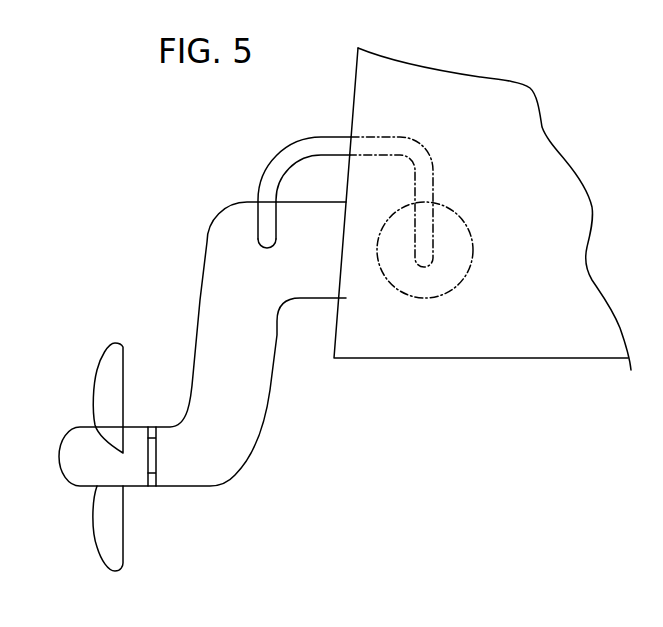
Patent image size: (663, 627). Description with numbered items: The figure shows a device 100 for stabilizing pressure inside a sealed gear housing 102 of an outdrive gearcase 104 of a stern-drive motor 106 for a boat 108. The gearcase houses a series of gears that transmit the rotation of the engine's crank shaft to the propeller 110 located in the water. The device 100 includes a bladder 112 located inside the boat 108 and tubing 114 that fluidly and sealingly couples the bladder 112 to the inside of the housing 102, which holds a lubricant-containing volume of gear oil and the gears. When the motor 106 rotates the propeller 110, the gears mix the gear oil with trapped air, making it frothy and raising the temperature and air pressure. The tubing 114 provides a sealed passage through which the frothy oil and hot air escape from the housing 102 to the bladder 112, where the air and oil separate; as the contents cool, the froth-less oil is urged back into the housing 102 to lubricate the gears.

The device 100 is at (455, 156).
The sealed gear housing 102 is at (213, 220).
The outdrive gearcase 104 is at (200, 177).
The stern-drive motor 106 is at (104, 243).
The boat 108 is at (354, 93).
The propeller 110 is at (102, 390).
The bladder 112 is at (463, 280).
The tubing 114 is at (278, 160).